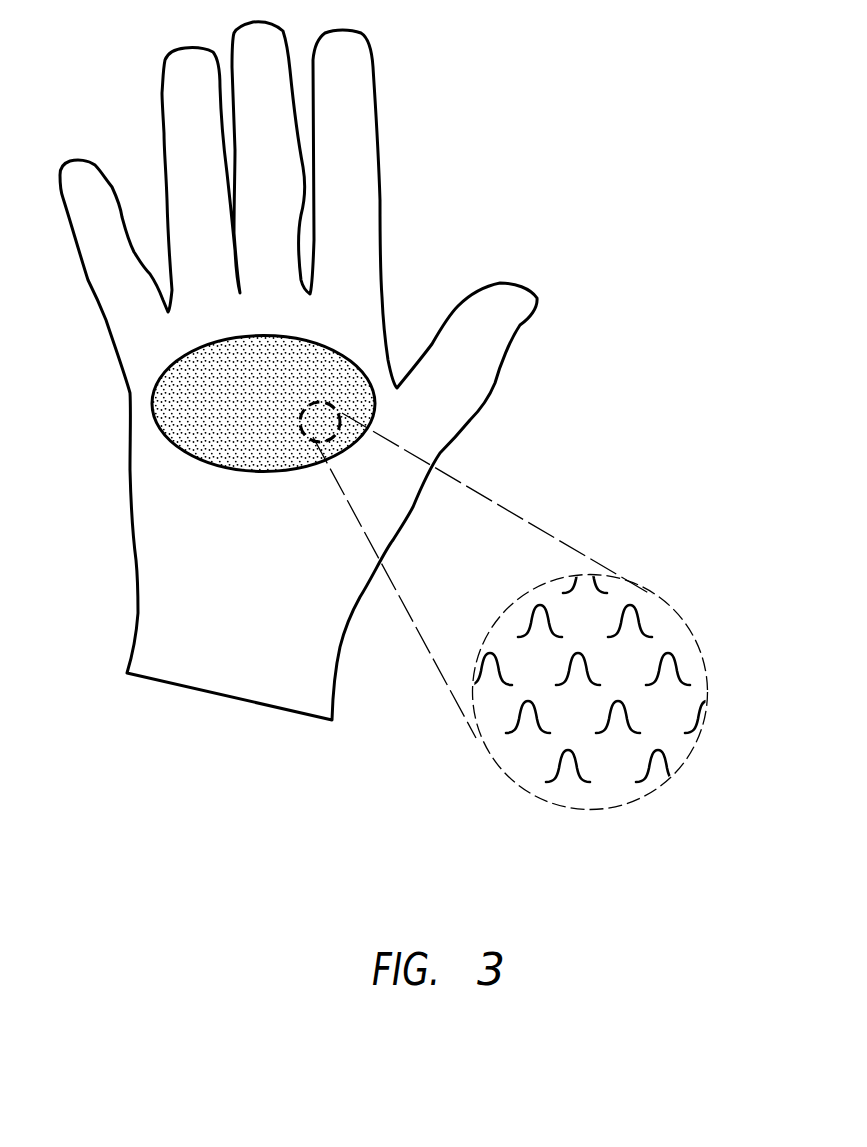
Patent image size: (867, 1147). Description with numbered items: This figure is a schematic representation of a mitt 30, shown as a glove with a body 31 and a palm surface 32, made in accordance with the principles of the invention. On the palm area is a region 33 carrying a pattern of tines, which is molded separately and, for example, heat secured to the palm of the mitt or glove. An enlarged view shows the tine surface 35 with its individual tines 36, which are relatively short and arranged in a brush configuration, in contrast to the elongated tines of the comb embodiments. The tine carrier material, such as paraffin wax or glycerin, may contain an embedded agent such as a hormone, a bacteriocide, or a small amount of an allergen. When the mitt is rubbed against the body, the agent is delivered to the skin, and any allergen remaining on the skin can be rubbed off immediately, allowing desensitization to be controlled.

The glove 30 is at (464, 143).
The glove body 31 is at (128, 417).
The palm portion of glove 32 is at (313, 321).
The textured gripping region 33 is at (197, 435).
The textured surface 35 is at (630, 660).
The protrusion 36 is at (632, 604).